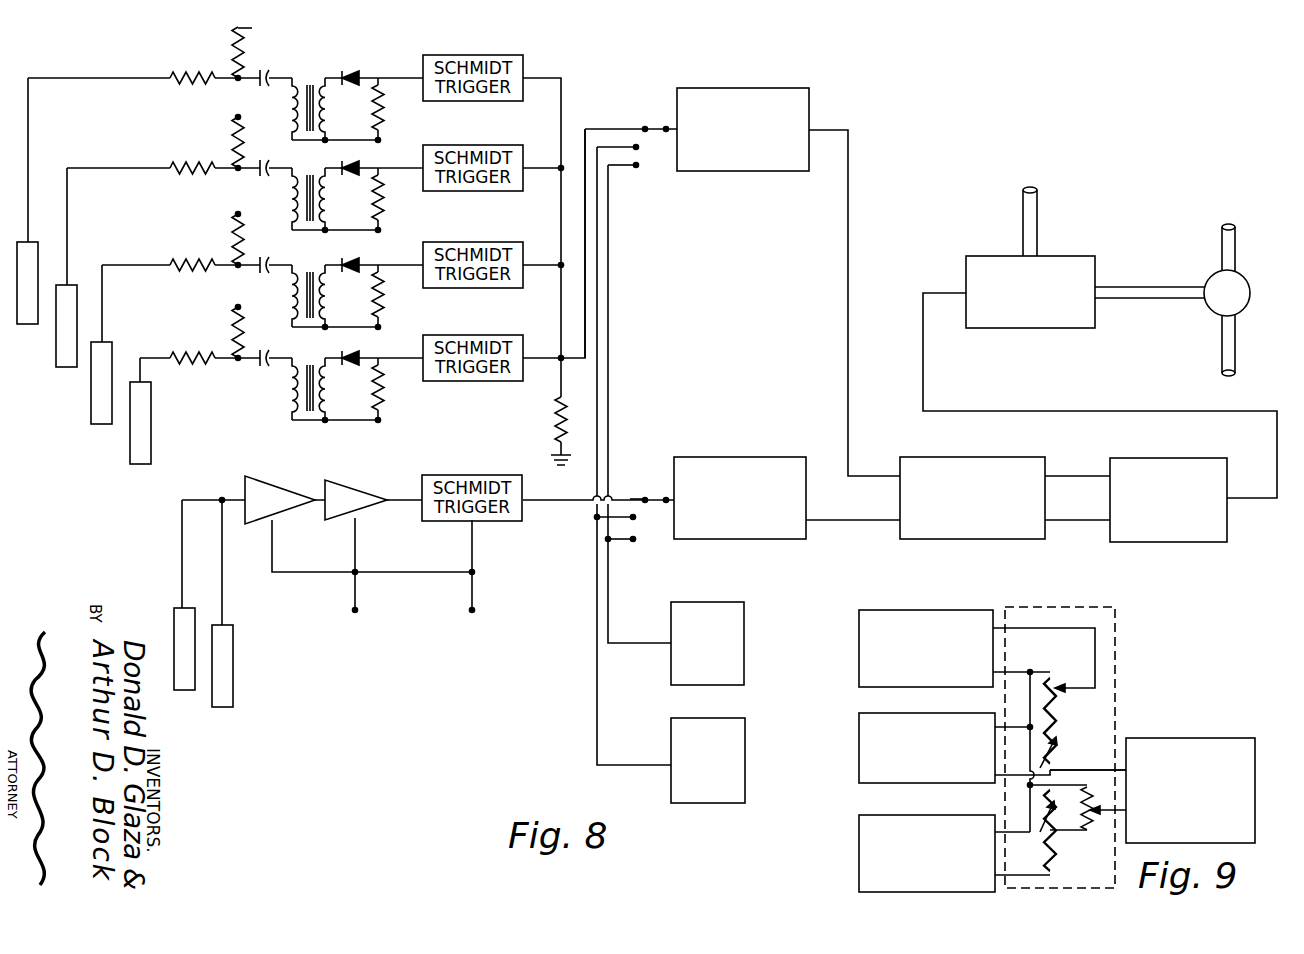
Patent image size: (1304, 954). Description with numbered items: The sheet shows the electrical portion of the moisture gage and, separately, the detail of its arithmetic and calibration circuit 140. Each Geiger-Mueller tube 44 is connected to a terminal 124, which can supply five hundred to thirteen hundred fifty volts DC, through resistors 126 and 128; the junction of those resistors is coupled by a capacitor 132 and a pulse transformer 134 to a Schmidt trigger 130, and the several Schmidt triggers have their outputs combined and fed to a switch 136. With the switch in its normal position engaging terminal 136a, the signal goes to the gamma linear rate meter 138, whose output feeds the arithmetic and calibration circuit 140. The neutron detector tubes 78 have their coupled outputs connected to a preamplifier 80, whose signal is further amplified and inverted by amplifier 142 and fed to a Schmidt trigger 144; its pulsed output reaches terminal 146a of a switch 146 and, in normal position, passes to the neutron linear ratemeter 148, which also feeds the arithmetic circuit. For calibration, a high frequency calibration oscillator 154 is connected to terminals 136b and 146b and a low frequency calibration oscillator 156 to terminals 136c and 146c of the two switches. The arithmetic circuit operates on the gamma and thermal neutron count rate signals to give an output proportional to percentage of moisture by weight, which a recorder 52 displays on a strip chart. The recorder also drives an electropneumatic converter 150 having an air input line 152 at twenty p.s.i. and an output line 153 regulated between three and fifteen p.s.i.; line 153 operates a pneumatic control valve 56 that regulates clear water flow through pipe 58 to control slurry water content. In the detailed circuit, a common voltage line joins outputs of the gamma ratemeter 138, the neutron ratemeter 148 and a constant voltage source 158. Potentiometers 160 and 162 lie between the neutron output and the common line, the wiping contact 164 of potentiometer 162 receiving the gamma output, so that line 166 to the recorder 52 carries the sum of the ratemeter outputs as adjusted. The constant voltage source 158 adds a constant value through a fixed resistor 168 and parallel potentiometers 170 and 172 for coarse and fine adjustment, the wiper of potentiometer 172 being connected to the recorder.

In FIG. 8, the Geiger-Mueller tubes 44 is at (27, 318).
In FIG. 8, the recorder 52 is at (1145, 457).
In FIG. 9, the recorder 52 is at (1172, 737).
In FIG. 8, the pneumatic control valve 56 is at (1248, 300).
In FIG. 8, the pipe 58 is at (1235, 252).
In FIG. 8, the neutron detector tubes 78 is at (188, 655).
In FIG. 8, the preamplifier 80 is at (270, 476).
In FIG. 8, the terminal 124 is at (252, 28).
In FIG. 8, the resistor 126 is at (176, 86).
In FIG. 8, the resistor 128 is at (235, 55).
In FIG. 8, the Schmidt trigger 130 is at (446, 335).
In FIG. 8, the capacitor 132 is at (258, 82).
In FIG. 8, the pulse transformer 134 is at (310, 85).
In FIG. 8, the switch 136 is at (645, 127).
In FIG. 8, the terminal 136a is at (636, 128).
In FIG. 8, the terminal 136b is at (636, 149).
In FIG. 8, the terminal 136c is at (636, 167).
In FIG. 8, the gamma linear rate meter 138 is at (775, 87).
In FIG. 9, the gamma linear rate meter 138 is at (920, 609).
In FIG. 8, the arithmetic and calibration circuit 140 is at (962, 456).
In FIG. 9, the arithmetic and calibration circuit 140 is at (1117, 637).
In FIG. 8, the amplifier 142 is at (352, 480).
In FIG. 8, the Schmidt trigger 144 is at (498, 474).
In FIG. 8, the switch 146 is at (655, 492).
In FIG. 8, the terminal 146a is at (636, 498).
In FIG. 8, the terminal 146b is at (633, 519).
In FIG. 8, the terminal 146c is at (633, 541).
In FIG. 8, the neutron linear ratemeter 148 is at (740, 456).
In FIG. 9, the neutron linear ratemeter 148 is at (910, 712).
In FIG. 8, the electropneumatic converter 150 is at (1028, 329).
In FIG. 8, the air input line 152 is at (1037, 220).
In FIG. 8, the output line 153 is at (1124, 287).
In FIG. 8, the high frequency calibration oscillator 154 is at (720, 717).
In FIG. 8, the low frequency calibration oscillator 156 is at (720, 601).
In FIG. 9, the constant voltage source 158 is at (910, 814).
In FIG. 9, the potentiometer 160 is at (1074, 744).
In FIG. 9, the potentiometer 162 is at (1058, 716).
In FIG. 9, the wiping contact 164 is at (1062, 688).
In FIG. 9, the line 166 is at (1068, 770).
In FIG. 9, the fixed resistor 168 is at (1052, 868).
In FIG. 9, the potentiometer 170 is at (1071, 815).
In FIG. 9, the potentiometer 172 is at (1092, 830).